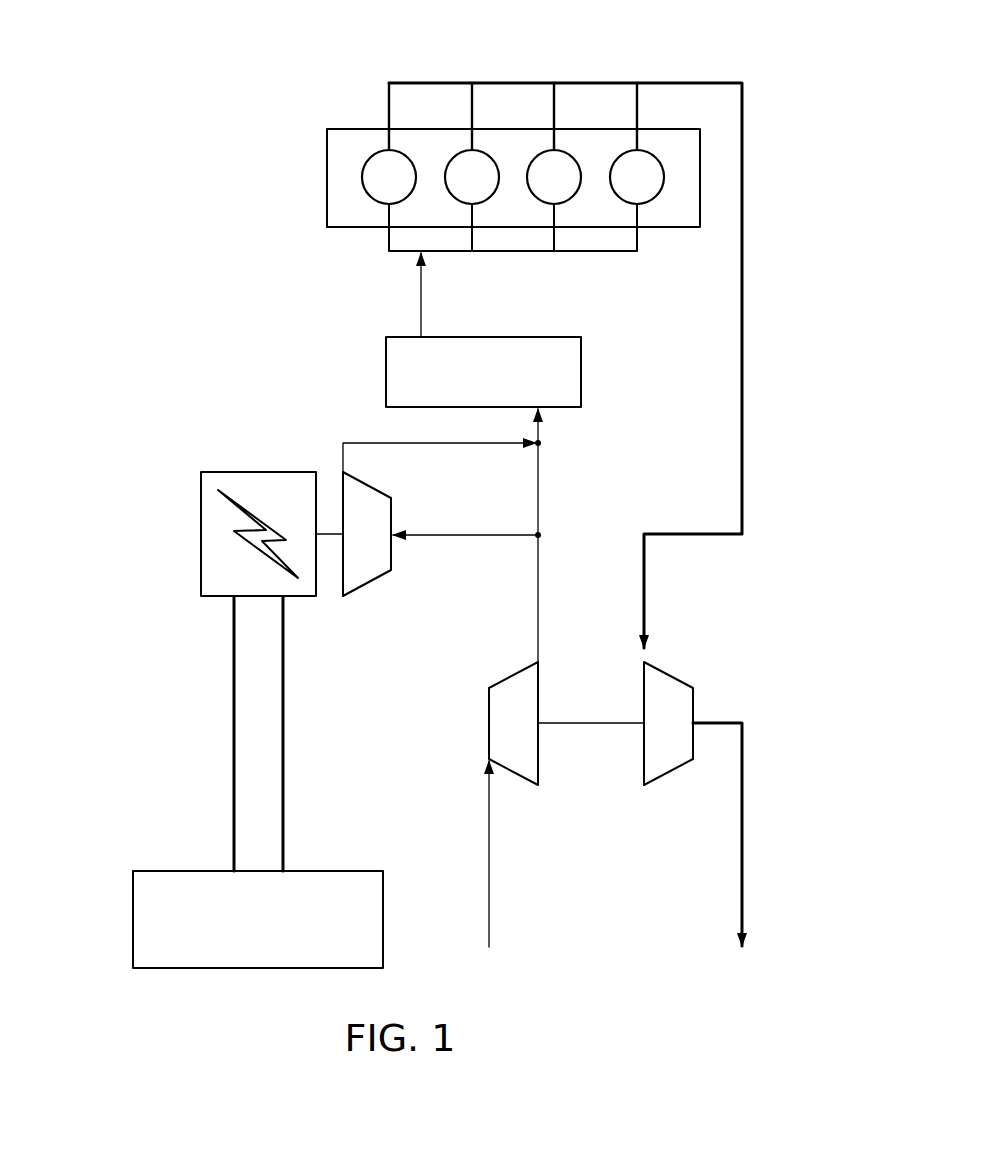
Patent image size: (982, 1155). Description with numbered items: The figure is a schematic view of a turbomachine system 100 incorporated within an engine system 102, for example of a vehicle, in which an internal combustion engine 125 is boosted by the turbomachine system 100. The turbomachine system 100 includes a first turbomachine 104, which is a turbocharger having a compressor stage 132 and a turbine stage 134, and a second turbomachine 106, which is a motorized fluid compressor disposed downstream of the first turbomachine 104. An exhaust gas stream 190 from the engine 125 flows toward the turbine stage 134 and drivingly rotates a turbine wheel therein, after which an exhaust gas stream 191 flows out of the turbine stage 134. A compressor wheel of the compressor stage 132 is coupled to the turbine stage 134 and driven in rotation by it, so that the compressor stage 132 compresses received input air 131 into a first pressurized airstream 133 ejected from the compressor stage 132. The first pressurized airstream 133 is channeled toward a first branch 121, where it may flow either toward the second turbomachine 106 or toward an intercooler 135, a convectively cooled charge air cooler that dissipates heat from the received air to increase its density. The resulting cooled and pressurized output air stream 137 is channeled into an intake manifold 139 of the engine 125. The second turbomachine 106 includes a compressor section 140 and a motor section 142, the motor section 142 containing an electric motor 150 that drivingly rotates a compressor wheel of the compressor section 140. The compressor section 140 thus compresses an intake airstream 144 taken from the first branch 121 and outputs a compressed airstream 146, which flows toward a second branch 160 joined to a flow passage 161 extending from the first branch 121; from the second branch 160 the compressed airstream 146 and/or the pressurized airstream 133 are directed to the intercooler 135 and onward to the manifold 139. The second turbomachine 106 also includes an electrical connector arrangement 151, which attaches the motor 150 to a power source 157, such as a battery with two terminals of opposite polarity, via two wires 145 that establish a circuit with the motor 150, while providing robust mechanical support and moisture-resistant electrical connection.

The turbomachine system 100 is at (100, 380).
The engine system 102 is at (814, 99).
The first turbomachine 104 is at (686, 652).
The second turbomachine 106 is at (193, 464).
The first branch 121 is at (539, 535).
The internal combustion engine 125 is at (327, 178).
The input air 131 is at (490, 905).
The compressor stage 132 is at (539, 785).
The first pressurized airstream 133 is at (538, 614).
The turbine stage 134 is at (693, 688).
The intercooler 135 is at (575, 355).
The output air stream 137 is at (421, 296).
The intake manifold 139 is at (389, 251).
The compressor section 140 is at (365, 579).
The motor section 142 is at (201, 513).
The intake airstream 144 is at (475, 537).
The wires 145 is at (210, 737).
The compressed airstream 146 is at (344, 442).
The electric motor 150 is at (208, 568).
The electrical connector arrangement 151 is at (218, 618).
The power source 157 is at (133, 920).
The second branch 160 is at (539, 443).
The flow passage 161 is at (539, 481).
The exhaust gas stream 190 is at (680, 82).
The exhaust gas stream 191 is at (742, 835).